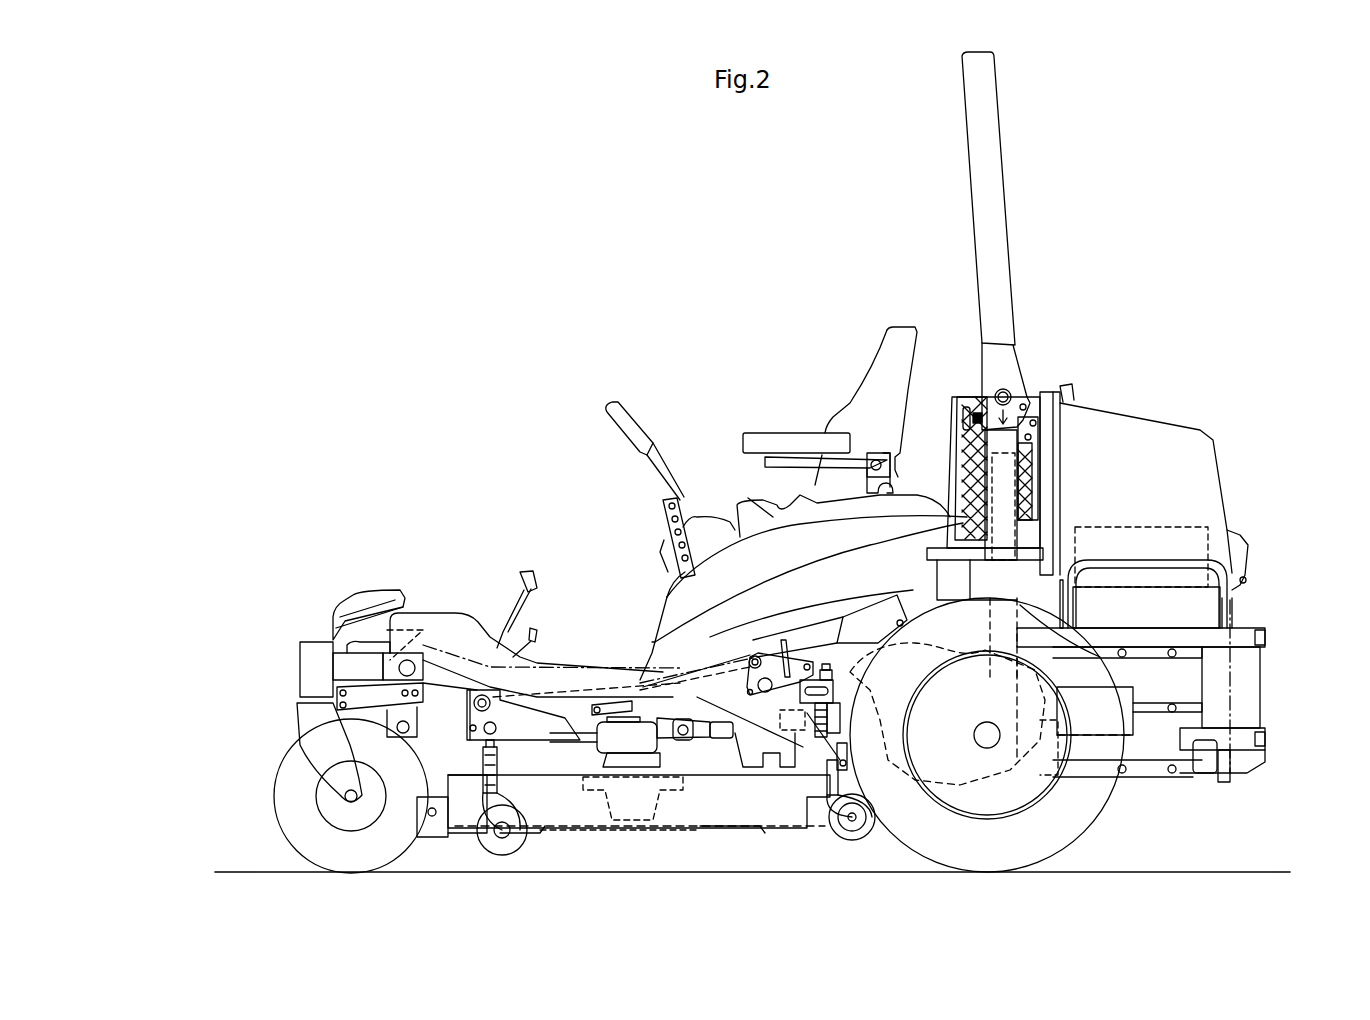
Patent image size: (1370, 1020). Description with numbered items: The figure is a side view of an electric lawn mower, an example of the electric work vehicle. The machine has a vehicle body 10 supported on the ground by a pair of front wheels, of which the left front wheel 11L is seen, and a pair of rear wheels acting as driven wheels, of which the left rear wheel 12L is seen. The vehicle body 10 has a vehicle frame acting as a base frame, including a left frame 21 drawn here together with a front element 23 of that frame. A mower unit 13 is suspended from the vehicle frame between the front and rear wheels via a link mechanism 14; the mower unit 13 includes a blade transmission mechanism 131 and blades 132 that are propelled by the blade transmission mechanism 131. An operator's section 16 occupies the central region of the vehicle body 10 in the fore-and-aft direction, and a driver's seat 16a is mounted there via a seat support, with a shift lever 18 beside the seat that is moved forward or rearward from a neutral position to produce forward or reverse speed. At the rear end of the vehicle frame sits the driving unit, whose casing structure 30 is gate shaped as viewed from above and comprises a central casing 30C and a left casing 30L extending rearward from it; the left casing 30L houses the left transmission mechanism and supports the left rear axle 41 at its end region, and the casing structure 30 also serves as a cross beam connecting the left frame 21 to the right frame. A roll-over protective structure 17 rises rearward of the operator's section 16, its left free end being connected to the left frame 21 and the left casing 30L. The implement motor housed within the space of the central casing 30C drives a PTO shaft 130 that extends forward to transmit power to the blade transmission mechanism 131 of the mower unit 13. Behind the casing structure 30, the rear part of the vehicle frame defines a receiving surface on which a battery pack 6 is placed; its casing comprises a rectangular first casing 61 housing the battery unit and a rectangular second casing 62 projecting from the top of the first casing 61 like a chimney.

The roll-over protective structure (ROPS) 17 is at (980, 168).
The operator's section 16 is at (715, 391).
The driver's seat 16a is at (872, 385).
The shift lever 18 is at (622, 433).
The casing structure 30 is at (858, 643).
The central casing 30C is at (880, 645).
The vehicle body 10 is at (447, 612).
The left frame 21 is at (467, 647).
The front support 23 is at (398, 660).
The left front wheel 11L is at (282, 800).
The link mechanism 14 is at (462, 735).
The mower unit 13 is at (646, 804).
The blade 132 is at (612, 830).
The blade transmission mechanism 131 is at (627, 727).
The PTO shaft 130 is at (737, 733).
The left rear wheel 12L is at (1054, 735).
The left rear axle 41 is at (980, 745).
The left casing 30L is at (1014, 763).
The battery pack 6 is at (1122, 515).
The second casing 62 is at (1132, 512).
The first casing 61 is at (1236, 618).